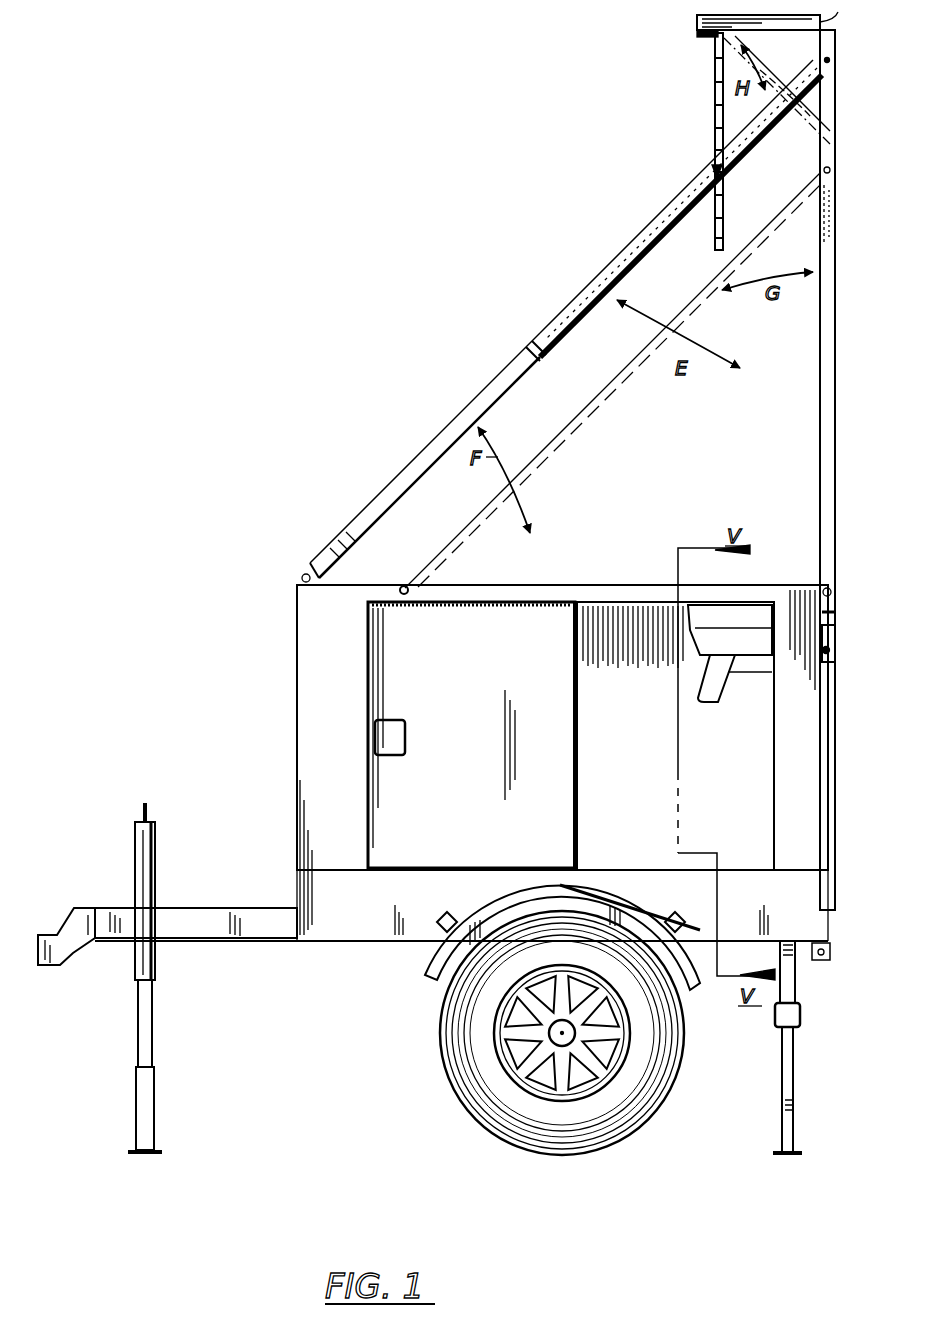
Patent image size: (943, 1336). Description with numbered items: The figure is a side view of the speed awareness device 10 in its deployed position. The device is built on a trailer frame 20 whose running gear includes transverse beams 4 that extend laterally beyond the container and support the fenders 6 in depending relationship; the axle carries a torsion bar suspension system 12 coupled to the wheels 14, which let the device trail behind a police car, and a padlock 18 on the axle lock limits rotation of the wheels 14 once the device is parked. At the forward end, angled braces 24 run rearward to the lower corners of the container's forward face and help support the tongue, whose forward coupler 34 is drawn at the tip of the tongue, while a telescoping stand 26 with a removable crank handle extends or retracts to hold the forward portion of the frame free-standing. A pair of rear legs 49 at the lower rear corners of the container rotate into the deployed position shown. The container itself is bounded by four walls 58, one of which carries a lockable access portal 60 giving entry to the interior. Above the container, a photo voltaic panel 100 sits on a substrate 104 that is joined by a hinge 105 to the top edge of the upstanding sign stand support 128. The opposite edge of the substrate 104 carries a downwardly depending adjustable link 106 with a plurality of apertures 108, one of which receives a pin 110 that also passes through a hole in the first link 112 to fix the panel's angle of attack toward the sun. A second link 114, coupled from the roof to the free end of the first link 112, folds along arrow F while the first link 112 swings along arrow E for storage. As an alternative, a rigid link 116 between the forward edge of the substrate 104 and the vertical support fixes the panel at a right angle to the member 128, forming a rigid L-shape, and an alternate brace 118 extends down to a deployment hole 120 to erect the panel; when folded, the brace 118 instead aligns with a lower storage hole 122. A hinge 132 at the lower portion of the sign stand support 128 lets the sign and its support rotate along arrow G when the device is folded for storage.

The transverse beams 4 is at (437, 928).
The fenders 6 is at (432, 975).
The speed awareness device 10 is at (340, 243).
The torsion bar suspension system 12 is at (512, 1020).
The wheels 14 is at (470, 1100).
The padlock 18 is at (580, 1078).
The trailer frame 20 is at (285, 948).
The angled braces 24 is at (220, 908).
The telescoping stand 26 is at (150, 872).
The hitch coupler 34 is at (65, 930).
The rear legs 49 is at (786, 1075).
The walls 58 is at (342, 716).
The access portal 60 is at (482, 719).
The photo voltaic panel 100 is at (690, 33).
The substrate 104 is at (748, 38).
The hinge 105 is at (842, 11).
The adjustable link 106 is at (715, 68).
The apertures 108 is at (715, 125).
The pin 110 is at (714, 168).
The first link 112 is at (645, 238).
The second link 114 is at (410, 468).
The rigid link 116 is at (800, 118).
The alternate brace 118 is at (598, 405).
The deployment hole 120 is at (403, 585).
The lower storage hole 122 is at (820, 957).
The sign stand support 128 is at (820, 429).
The hinge 132 is at (822, 592).